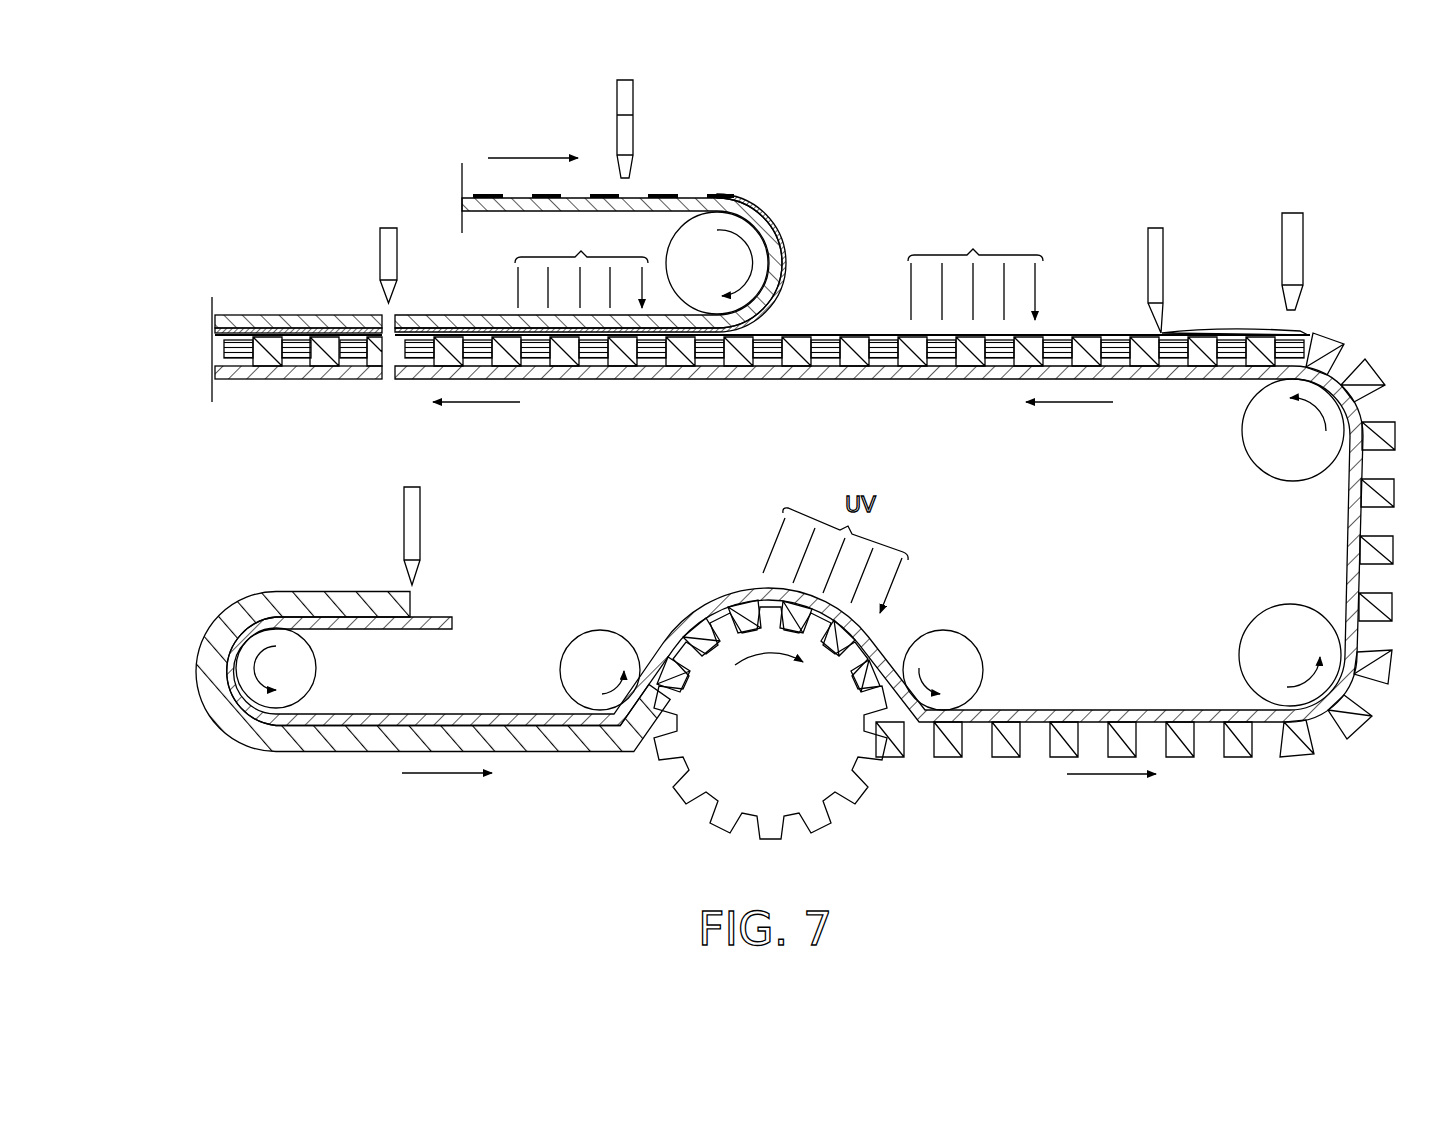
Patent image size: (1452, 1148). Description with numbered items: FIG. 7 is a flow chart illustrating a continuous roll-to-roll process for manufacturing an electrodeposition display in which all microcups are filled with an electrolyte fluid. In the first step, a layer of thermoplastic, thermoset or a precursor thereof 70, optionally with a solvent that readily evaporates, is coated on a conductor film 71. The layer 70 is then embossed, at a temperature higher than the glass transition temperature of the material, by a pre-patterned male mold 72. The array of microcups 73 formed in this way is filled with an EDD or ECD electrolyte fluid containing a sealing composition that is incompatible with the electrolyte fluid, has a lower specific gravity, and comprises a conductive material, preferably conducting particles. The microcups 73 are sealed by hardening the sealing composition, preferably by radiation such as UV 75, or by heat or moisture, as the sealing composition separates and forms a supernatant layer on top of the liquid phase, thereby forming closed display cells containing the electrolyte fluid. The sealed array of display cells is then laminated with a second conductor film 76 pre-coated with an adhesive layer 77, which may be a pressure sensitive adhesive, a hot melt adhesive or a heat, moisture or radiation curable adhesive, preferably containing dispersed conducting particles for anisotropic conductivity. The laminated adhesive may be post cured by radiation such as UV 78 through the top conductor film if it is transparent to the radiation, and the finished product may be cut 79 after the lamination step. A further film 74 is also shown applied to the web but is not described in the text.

The layer of thermoplastic, thermoset or a precursor thereof 70 is at (335, 751).
The conductor film 71 is at (402, 713).
The pre-patterned male mold 72 is at (683, 809).
The microcups 73 is at (1209, 751).
The cover film 74 is at (1298, 333).
The UV 75 is at (1036, 288).
The second conductor film 76 is at (780, 246).
The adhesive layer 77 is at (748, 197).
The UV 78 is at (516, 287).
The cut 79 is at (378, 262).